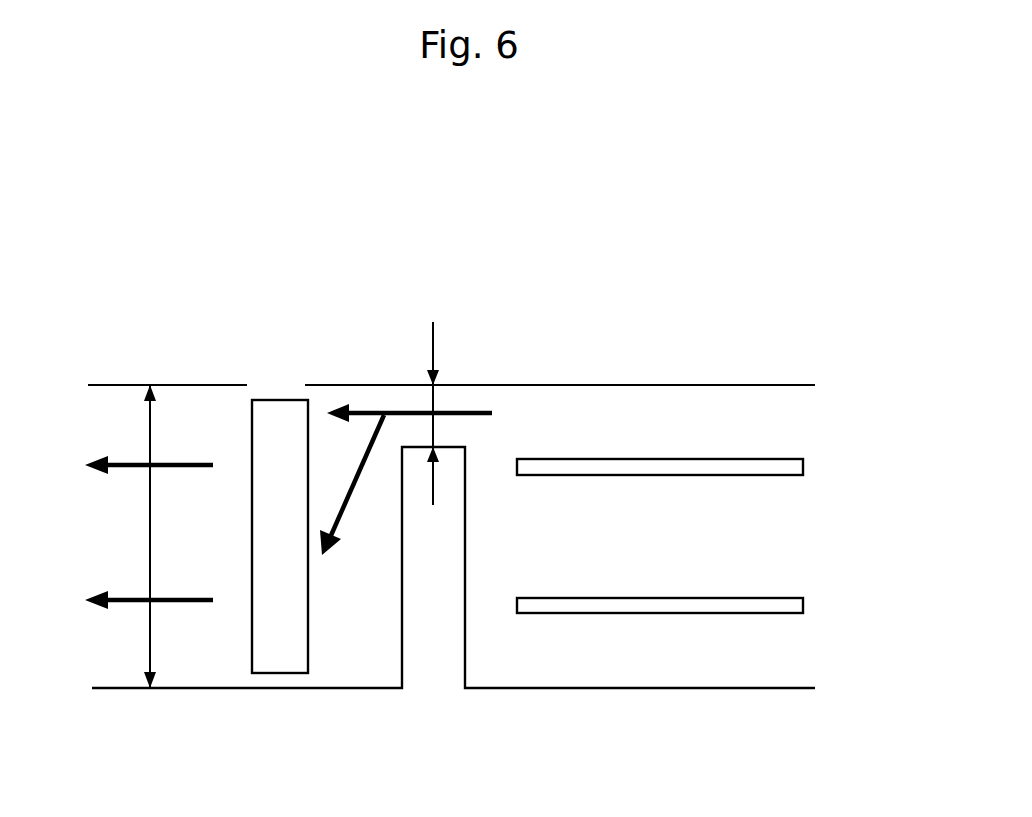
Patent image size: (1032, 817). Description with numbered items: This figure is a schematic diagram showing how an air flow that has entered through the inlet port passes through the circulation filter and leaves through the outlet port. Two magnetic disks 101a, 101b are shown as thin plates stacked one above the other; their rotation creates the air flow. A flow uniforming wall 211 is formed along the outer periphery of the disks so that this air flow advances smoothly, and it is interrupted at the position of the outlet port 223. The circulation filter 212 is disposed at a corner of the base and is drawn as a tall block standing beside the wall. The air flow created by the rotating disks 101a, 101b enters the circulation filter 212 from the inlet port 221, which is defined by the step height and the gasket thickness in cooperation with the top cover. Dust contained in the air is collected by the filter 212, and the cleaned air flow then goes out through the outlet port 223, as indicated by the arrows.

The flow uniforming wall 211 is at (440, 622).
The circulation filter 212 is at (277, 400).
The inlet port 221 is at (436, 403).
The outlet port 223 is at (150, 438).
The magnetic disk 101a is at (803, 467).
The magnetic disk 101b is at (803, 605).